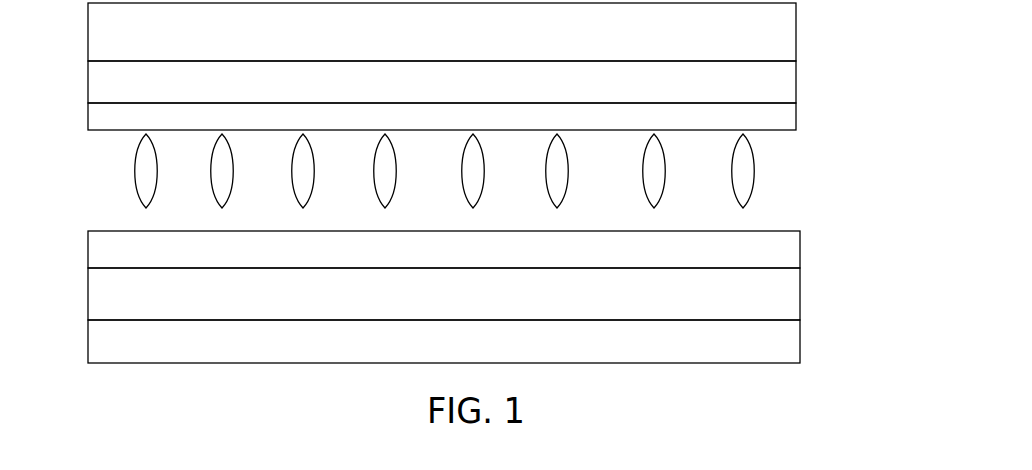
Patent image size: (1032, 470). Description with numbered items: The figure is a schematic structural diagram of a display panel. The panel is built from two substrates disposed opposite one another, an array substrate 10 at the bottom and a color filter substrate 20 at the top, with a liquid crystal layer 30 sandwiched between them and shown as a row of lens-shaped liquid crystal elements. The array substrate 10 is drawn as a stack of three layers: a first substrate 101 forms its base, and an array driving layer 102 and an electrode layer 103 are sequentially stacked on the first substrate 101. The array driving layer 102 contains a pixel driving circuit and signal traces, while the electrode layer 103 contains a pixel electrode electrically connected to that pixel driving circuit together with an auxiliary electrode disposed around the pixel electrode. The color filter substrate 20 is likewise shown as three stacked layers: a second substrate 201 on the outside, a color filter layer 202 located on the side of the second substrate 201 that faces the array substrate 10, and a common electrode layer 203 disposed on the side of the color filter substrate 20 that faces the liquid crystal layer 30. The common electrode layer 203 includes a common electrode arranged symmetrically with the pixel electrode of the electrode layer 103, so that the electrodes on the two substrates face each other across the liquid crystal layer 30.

The array substrate 10 is at (474, 297).
The first substrate 101 is at (780, 351).
The array driving layer 102 is at (780, 299).
The electrode layer 103 is at (780, 250).
The color filter substrate 20 is at (472, 68).
The second substrate 201 is at (780, 38).
The color filter layer 202 is at (780, 84).
The common electrode layer 203 is at (780, 122).
The liquid crystal layer 30 is at (80, 150).